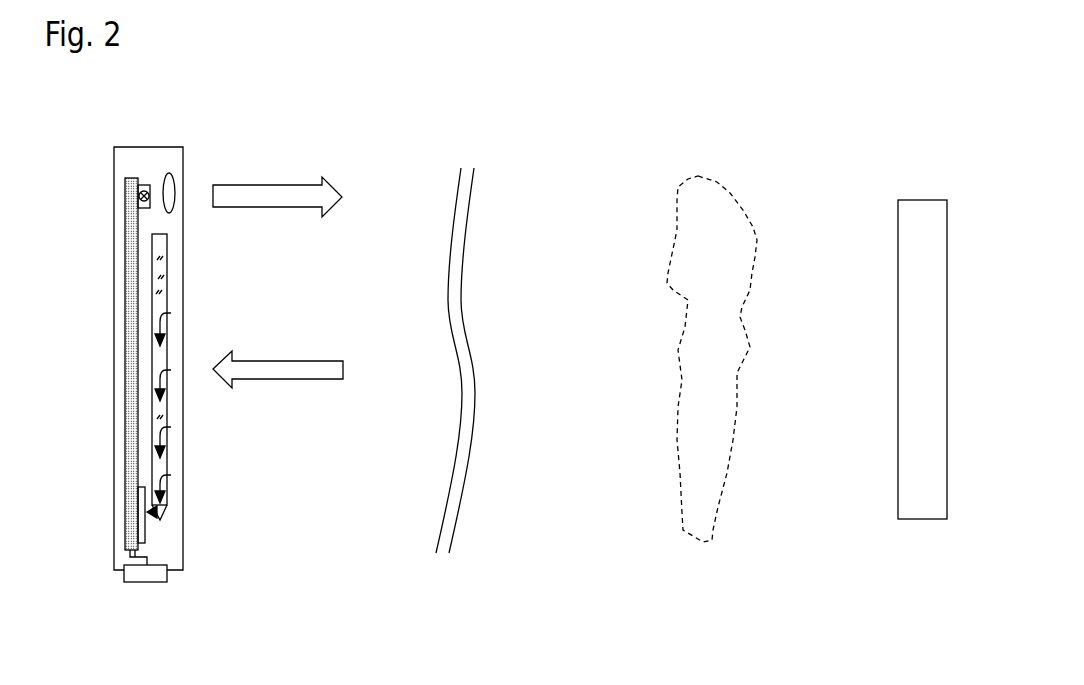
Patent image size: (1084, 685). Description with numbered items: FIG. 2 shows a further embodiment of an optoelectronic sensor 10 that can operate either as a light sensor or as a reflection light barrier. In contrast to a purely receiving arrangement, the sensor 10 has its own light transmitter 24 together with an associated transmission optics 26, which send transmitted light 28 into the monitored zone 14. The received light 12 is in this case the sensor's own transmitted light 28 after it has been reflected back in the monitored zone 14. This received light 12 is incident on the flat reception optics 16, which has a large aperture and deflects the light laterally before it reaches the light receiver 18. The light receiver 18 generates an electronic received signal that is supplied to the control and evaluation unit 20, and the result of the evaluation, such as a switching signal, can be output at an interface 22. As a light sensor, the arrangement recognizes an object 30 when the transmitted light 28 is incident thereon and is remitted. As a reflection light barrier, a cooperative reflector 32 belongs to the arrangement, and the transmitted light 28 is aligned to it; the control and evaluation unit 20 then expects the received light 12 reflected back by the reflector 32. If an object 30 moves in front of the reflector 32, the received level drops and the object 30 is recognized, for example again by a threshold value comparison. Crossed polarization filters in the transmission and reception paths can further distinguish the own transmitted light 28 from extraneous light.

The optoelectronic sensor 10 is at (117, 333).
The received light 12 is at (281, 401).
The monitored zone 14 is at (543, 309).
The reception optics 16 is at (197, 377).
The light receiver 18 is at (193, 515).
The control and evaluation unit 20 is at (100, 371).
The interface 22 is at (136, 606).
The light transmitter 24 is at (158, 149).
The transmission optics 26 is at (205, 172).
The transmitted light 28 is at (283, 173).
The object 30 is at (726, 342).
The reflector 32 is at (929, 330).